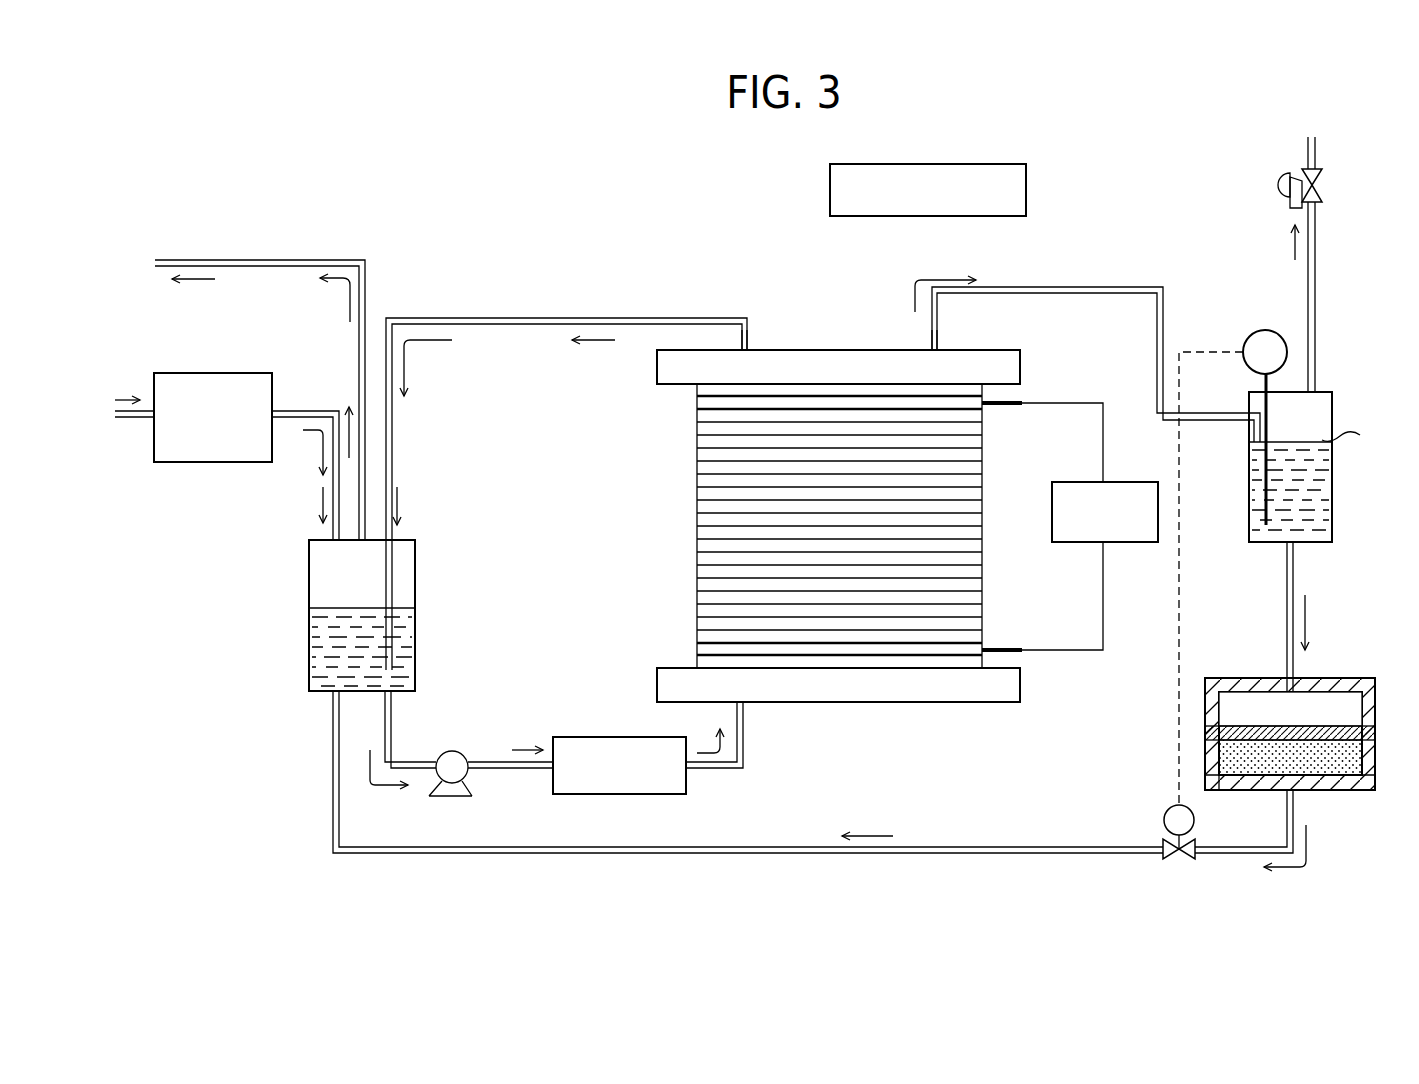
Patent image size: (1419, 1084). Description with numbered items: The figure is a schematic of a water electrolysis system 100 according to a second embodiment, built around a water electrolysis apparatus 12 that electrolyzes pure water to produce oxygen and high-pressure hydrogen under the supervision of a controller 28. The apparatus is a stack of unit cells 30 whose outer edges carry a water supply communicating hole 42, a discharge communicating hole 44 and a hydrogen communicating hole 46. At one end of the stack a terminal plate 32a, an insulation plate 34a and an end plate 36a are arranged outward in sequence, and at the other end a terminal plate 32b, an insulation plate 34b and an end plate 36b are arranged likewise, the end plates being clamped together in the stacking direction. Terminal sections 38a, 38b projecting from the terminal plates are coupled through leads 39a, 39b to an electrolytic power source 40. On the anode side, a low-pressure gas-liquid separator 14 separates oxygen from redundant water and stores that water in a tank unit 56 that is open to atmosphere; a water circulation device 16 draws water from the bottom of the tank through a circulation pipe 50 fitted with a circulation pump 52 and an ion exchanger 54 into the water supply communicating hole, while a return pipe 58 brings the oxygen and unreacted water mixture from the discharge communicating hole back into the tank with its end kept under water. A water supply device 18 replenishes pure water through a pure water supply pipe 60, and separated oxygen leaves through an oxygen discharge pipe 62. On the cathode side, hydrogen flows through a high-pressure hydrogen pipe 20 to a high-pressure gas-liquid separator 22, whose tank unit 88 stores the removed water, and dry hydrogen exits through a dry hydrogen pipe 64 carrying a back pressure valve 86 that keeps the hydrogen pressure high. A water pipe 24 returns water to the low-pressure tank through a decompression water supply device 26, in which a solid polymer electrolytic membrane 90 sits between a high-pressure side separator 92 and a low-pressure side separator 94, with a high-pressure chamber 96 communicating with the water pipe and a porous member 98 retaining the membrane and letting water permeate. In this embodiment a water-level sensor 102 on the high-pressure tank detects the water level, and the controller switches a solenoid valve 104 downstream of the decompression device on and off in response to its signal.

The water electrolysis system 100 is at (662, 150).
The water electrolysis apparatus 12 is at (873, 499).
The low-pressure gas-liquid separator 14 is at (392, 600).
The water circulation device 16 is at (700, 785).
The water supply device 18 is at (187, 463).
The high-pressure hydrogen pipe 20 is at (1117, 295).
The high-pressure gas-liquid separator 22 is at (1326, 442).
The water pipe 24 is at (1294, 572).
The decompression water supply device 26 is at (1306, 731).
The controller 28 is at (1028, 180).
The unit cell 30 is at (703, 493).
The terminal plate 32a is at (857, 402).
The terminal plate 32b is at (910, 648).
The insulation plate 34a is at (833, 388).
The insulation plate 34b is at (833, 663).
The end plate 36a is at (994, 346).
The end plate 36b is at (973, 706).
The terminal section 38a is at (1007, 410).
The terminal section 38b is at (1000, 645).
The lead 39a is at (1103, 416).
The lead 39b is at (1103, 585).
The electrolytic power source 40 is at (1132, 481).
The water supply communicating hole 42 is at (745, 703).
The discharge communicating hole 44 is at (750, 348).
The hydrogen communicating hole 46 is at (927, 347).
The circulation pipe 50 is at (480, 762).
The circulation pump 52 is at (452, 751).
The ion exchanger 54 is at (568, 737).
The tank unit 56 is at (416, 643).
The return pipe 58 is at (515, 327).
The pure water supply pipe 60 is at (287, 418).
The oxygen discharge pipe 62 is at (287, 254).
The dry hydrogen pipe 64 is at (1316, 242).
The back pressure valve 86 is at (1282, 178).
The tank unit 88 is at (1333, 497).
The solid polymer electrolytic membrane 90 is at (1330, 733).
The high-pressure side separator 92 is at (1247, 680).
The low-pressure side separator 94 is at (1245, 783).
The high-pressure chamber 96 is at (1347, 717).
The porous member 98 is at (1353, 763).
The water-level sensor 102 is at (1257, 328).
The solenoid valve 104 is at (1172, 858).